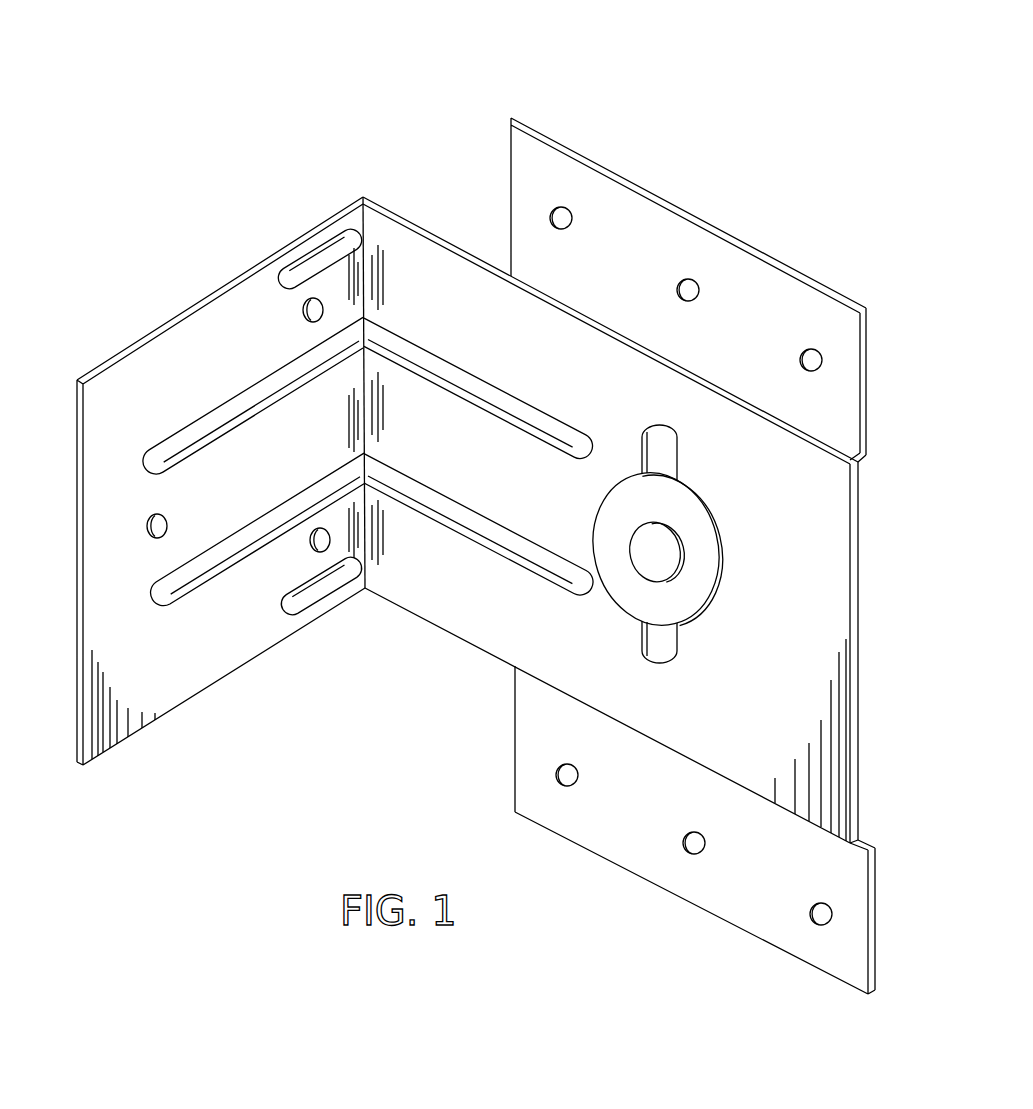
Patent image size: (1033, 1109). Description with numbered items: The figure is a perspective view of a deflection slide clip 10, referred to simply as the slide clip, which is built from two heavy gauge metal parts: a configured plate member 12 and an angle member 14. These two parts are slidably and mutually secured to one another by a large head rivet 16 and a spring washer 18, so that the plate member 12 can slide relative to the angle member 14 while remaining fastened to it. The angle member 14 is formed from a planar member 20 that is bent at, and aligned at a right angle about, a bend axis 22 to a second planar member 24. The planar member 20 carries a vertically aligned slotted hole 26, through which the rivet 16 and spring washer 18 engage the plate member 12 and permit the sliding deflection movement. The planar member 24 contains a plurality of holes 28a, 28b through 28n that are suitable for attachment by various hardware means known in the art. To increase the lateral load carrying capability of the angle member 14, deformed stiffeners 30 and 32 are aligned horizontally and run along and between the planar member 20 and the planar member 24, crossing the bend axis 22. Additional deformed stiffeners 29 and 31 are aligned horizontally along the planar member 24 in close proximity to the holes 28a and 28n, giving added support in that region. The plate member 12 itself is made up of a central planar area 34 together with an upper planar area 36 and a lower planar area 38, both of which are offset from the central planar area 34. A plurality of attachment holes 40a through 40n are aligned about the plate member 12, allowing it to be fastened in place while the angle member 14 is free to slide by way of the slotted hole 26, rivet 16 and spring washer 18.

The deflection slide clip 10 is at (760, 102).
The plate member 12 is at (889, 382).
The angle member 14 is at (137, 310).
The large head rivet 16 is at (672, 553).
The spring washer 18 is at (700, 541).
The planar member 20 is at (462, 467).
The bend axis 22 is at (360, 403).
The planar member 24 is at (217, 489).
The slotted hole 26 is at (662, 447).
The hole 28a is at (303, 312).
The hole 28b is at (147, 527).
The hole 28n is at (310, 548).
The deformed stiffener 29 is at (338, 240).
The deformed stiffener 30 is at (210, 428).
The deformed stiffener 31 is at (316, 610).
The deformed stiffener 32 is at (225, 592).
The central planar area 34 is at (867, 507).
The upper planar area 36 is at (710, 359).
The lower planar area 38 is at (614, 809).
The attachment hole 40a is at (566, 209).
The attachment hole 40n is at (832, 910).